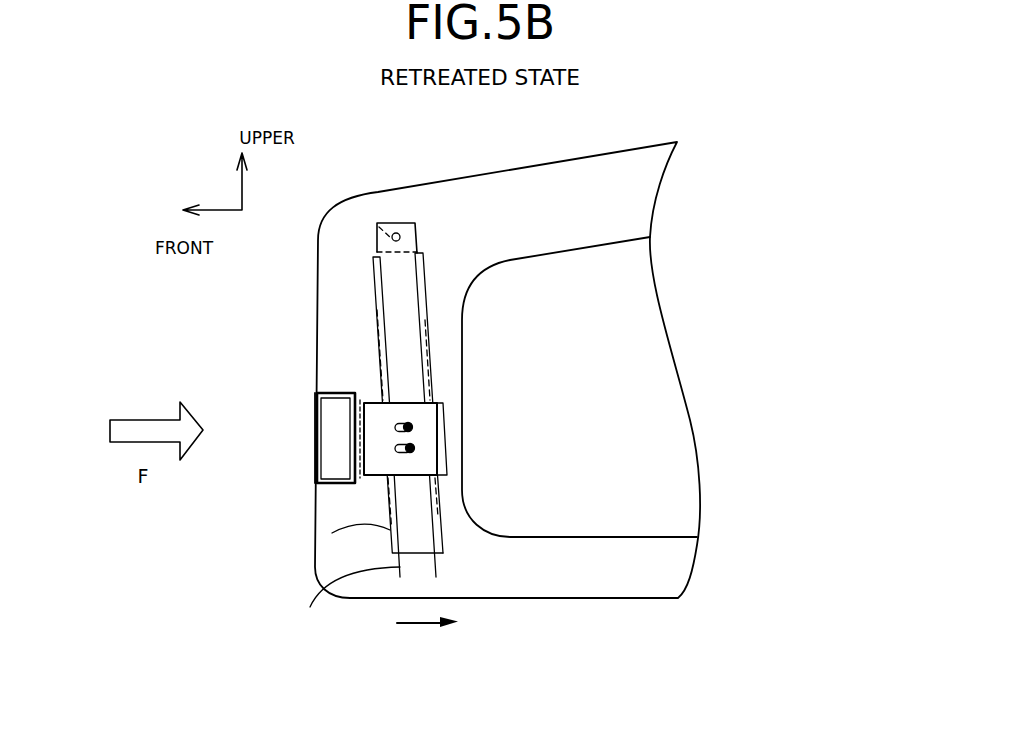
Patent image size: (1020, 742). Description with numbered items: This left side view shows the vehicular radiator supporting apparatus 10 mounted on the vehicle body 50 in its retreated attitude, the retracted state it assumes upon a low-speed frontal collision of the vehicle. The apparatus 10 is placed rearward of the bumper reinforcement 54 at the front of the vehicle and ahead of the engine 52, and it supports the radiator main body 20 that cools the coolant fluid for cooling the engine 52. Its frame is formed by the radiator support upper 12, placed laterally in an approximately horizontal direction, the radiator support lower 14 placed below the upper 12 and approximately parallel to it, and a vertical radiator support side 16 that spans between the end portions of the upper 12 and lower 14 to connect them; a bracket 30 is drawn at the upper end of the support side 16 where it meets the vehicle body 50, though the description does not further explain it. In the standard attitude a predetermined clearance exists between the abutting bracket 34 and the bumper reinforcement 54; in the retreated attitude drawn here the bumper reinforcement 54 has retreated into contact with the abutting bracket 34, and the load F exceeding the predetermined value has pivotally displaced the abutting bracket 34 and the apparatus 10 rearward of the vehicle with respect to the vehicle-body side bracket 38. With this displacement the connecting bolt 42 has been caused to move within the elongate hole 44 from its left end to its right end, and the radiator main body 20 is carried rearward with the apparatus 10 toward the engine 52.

The vehicular radiator supporting apparatus 10 is at (344, 243).
The radiator support upper 12 is at (377, 222).
The radiator support lower 14 is at (343, 598).
The radiator support side 16 is at (397, 307).
The radiator main body 20 is at (328, 535).
The bracket 30 is at (401, 236).
The abutting bracket 34 is at (350, 425).
The vehicle-body side bracket 38 is at (425, 452).
The connecting bolt 42 is at (407, 425).
The elongate hole 44 is at (408, 452).
The vehicle body 50 is at (511, 165).
The engine 52 is at (650, 357).
The bumper reinforcement 54 is at (315, 470).